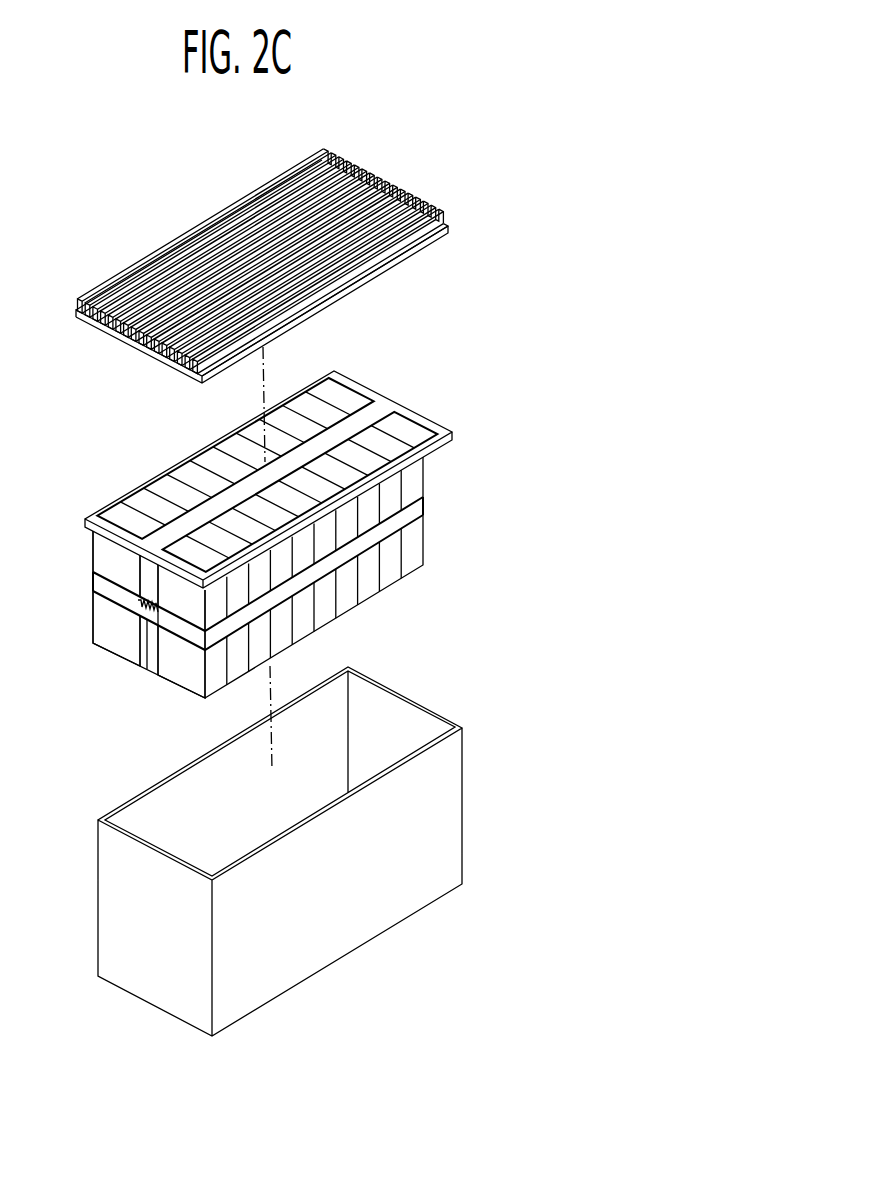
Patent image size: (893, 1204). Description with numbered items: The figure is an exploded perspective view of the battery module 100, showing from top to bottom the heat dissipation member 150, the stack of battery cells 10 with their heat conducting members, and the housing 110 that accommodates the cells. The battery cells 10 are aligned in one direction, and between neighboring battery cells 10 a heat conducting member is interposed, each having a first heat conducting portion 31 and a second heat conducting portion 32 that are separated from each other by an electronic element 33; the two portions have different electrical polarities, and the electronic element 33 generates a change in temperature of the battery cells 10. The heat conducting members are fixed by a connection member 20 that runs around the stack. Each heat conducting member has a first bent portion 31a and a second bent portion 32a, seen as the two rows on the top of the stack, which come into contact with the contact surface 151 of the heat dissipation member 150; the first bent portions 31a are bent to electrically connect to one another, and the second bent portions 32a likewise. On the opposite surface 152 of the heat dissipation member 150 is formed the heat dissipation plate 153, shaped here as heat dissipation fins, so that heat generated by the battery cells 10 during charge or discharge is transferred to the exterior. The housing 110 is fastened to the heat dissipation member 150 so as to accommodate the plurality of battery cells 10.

The battery module 100 is at (106, 173).
The heat dissipation member 150 is at (536, 178).
The contact surface 151 is at (444, 239).
The opposite surface 152 is at (452, 219).
The heat dissipation plate 153 is at (447, 203).
The battery cell 10 is at (412, 484).
The connection member 20 is at (420, 517).
The first heat conducting portion 31 is at (118, 637).
The second heat conducting portion 32 is at (183, 670).
The electronic element 33 is at (147, 625).
The first bent portion 31a is at (348, 388).
The second bent portion 32a is at (413, 425).
The housing 110 is at (417, 698).